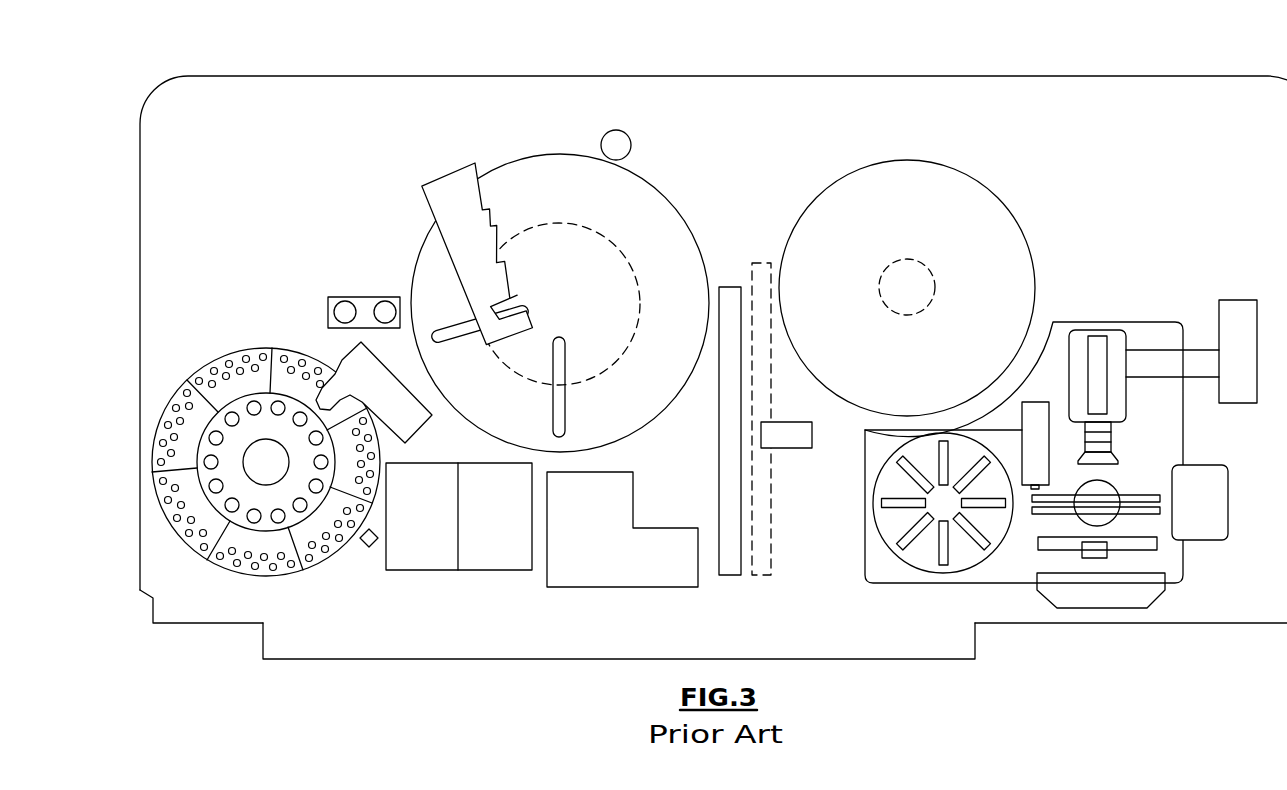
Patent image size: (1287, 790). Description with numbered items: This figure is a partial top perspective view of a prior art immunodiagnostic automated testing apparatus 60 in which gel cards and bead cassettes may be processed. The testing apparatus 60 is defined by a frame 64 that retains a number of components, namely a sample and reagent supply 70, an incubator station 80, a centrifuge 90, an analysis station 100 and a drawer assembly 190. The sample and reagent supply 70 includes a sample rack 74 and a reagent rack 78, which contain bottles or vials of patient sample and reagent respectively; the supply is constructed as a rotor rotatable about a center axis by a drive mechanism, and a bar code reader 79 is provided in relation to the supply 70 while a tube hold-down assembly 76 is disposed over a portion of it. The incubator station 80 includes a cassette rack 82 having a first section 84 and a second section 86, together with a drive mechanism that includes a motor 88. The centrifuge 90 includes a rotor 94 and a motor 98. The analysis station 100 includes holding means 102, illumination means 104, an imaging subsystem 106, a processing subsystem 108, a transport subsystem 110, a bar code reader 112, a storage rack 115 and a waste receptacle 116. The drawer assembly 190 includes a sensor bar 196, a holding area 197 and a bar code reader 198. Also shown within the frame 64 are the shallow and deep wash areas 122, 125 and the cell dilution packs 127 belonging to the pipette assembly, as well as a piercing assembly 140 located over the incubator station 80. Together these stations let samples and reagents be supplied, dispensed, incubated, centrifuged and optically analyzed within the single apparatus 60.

The automated testing apparatus 60 is at (220, 66).
The frame 64 is at (140, 192).
The sample and reagent supply 70 is at (266, 437).
The sample rack 74 is at (273, 578).
The tube hold-down assembly 76 is at (405, 425).
The reagent rack 78 is at (256, 402).
The bar code reader 79 is at (369, 550).
The incubator station 80 is at (555, 276).
The cassette rack 82 is at (682, 212).
The first section 84 is at (464, 224).
The second section 86 is at (634, 320).
The motor 88 is at (626, 143).
The centrifuge 90 is at (927, 267).
The rotor 94 is at (875, 175).
The motor 98 is at (923, 278).
The analysis station 100 is at (1106, 312).
The holding means 102 is at (1105, 490).
The illumination means 104 is at (1142, 600).
The imaging subsystem 106 is at (1112, 412).
The processing subsystem 108 is at (1237, 310).
The transport subsystem 110 is at (1150, 550).
The bar code reader 112 is at (1030, 428).
The storage rack 115 is at (925, 558).
The waste receptacle 116 is at (1216, 487).
The shallow wash area 122 is at (345, 300).
The deep wash area 125 is at (388, 300).
The cell dilution packs 127 is at (498, 560).
The piercing assembly 140 is at (503, 162).
The drawer assembly 190 is at (336, 680).
The sensor bar 196 is at (772, 525).
The holding area 197 is at (653, 575).
The bar code reader 198 is at (790, 422).